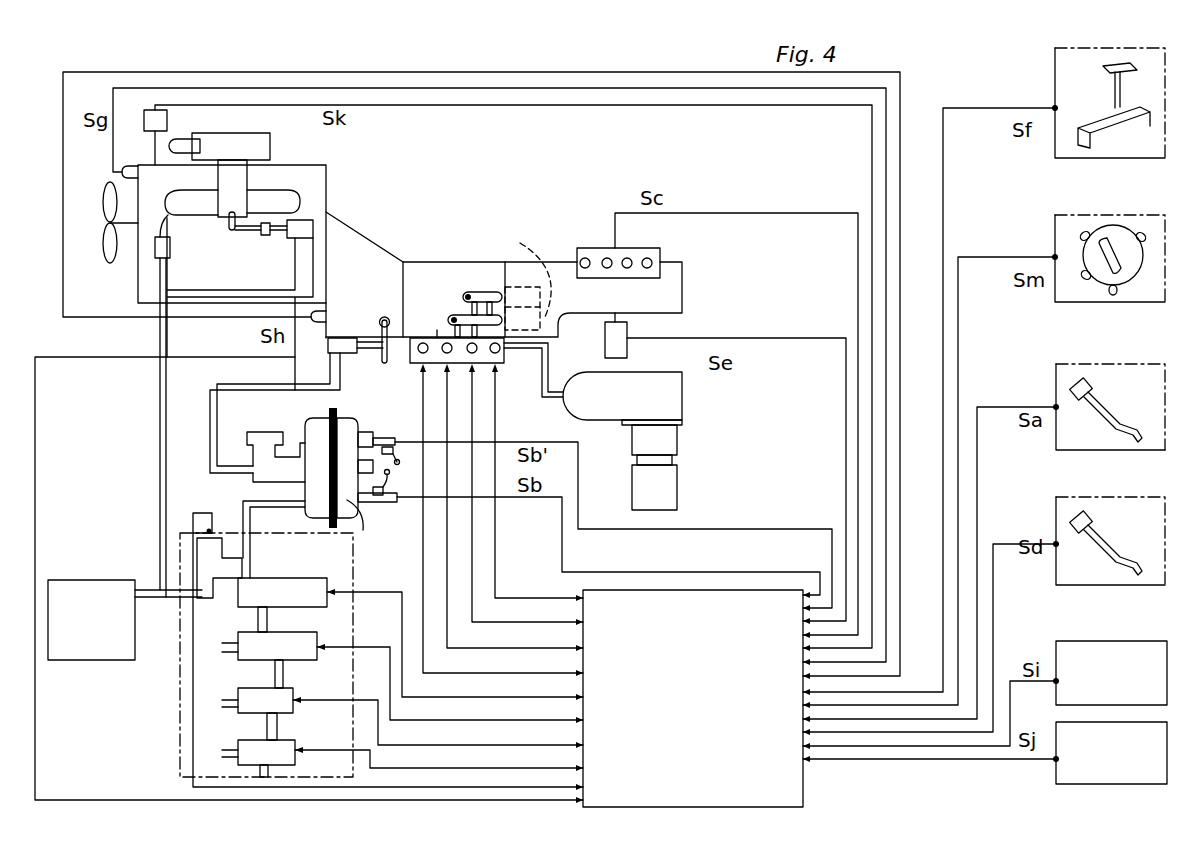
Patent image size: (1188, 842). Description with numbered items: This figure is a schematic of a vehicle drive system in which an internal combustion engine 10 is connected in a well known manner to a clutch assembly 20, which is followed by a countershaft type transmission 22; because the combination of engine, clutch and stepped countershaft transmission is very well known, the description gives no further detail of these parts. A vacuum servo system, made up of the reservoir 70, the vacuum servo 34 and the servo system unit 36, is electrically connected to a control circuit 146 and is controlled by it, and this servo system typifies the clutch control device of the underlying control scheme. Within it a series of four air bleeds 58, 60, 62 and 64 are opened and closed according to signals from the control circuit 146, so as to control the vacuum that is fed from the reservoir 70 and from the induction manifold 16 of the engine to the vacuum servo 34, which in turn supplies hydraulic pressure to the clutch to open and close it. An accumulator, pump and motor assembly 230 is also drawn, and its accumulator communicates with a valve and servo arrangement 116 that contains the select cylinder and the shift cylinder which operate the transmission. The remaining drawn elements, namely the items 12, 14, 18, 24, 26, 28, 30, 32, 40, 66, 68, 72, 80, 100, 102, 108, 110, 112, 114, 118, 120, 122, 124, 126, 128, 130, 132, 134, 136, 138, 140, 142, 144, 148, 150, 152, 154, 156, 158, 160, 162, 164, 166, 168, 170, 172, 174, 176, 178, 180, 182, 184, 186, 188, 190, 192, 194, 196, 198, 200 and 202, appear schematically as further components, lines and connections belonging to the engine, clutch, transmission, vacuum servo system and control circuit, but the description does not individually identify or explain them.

The internal combustion engine 10 is at (338, 170).
The air cleaner / carburetor 12 is at (250, 133).
The exhaust manifold 14 is at (253, 180).
The induction manifold 16 is at (180, 190).
The accelerator pedal 18 is at (1130, 414).
The clutch assembly 20 is at (366, 219).
The countershaft type transmission 22 is at (505, 262).
The clutch lever 24 is at (387, 360).
The link rod 26 is at (372, 350).
The clutch actuator 28 is at (328, 353).
The vacuum booster 30 is at (297, 530).
The vacuum conduit 32 is at (253, 482).
The vacuum servo 34 is at (305, 418).
The vacuum servo system 36 is at (180, 680).
The vacuum pipe 40 is at (210, 405).
The air bleed 58 is at (310, 607).
The air bleed 60 is at (305, 660).
The air bleed 62 is at (298, 713).
The air bleed 64 is at (240, 740).
The check valve 66 is at (219, 520).
The vacuum pipe 68 is at (158, 491).
The reservoir 70 is at (100, 662).
The vacuum take-off 72 is at (153, 250).
The valve block 80 is at (203, 600).
The clutch disc 100 is at (550, 267).
The clutch pressure plate 102 is at (525, 262).
The release bearing leg 108 is at (478, 301).
The release lever 110 is at (468, 292).
The release fork 112 is at (450, 317).
The release rod 114 is at (437, 332).
The valve and servo arrangement 116 is at (507, 365).
The shift lever 118 is at (1113, 72).
The EGR valve 120 is at (266, 236).
The vacuum valve 122 is at (229, 223).
The EGR control box 124 is at (290, 238).
The EGR pipe 126 is at (218, 290).
The control wire 128 is at (359, 588).
The control wire 130 is at (388, 647).
The control wire 132 is at (378, 700).
The control wire 134 is at (346, 750).
The control wire 136 is at (192, 787).
The sensor wire 138 is at (496, 510).
The sensor wire 140 is at (472, 533).
The sensor wire 142 is at (447, 562).
The sensor wire 144 is at (423, 588).
The control circuit 146 is at (803, 792).
The wire 148 is at (40, 740).
The brake pedal 150 is at (1128, 549).
The accelerator pedal switch 152 is at (1056, 390).
The wire 154 is at (977, 450).
The push rod 156 is at (374, 526).
The push rod 158 is at (366, 432).
The switch 160 is at (397, 458).
The wire 162 is at (612, 572).
The gear position switch 164 is at (660, 245).
The wire 166 is at (835, 214).
The brake pedal switch 168 is at (1056, 525).
The wire 170 is at (993, 607).
The speed sensor 172 is at (627, 355).
The wire 174 is at (828, 340).
The shift lever switch 176 is at (1054, 90).
The wire 178 is at (943, 168).
The fan speed sensor 180 is at (122, 172).
The wire 182 is at (633, 88).
The engine speed sensor 184 is at (325, 313).
The wire 186 is at (553, 72).
The inclinometer 188 is at (1100, 641).
The wire 190 is at (897, 746).
The air conditioner 192 is at (1056, 776).
The wire 194 is at (942, 759).
The temperature sensor 196 is at (167, 120).
The wire 198 is at (733, 105).
The ignition switch 200 is at (1055, 232).
The wire 202 is at (958, 310).
The accumulator, pump and motor 230 is at (684, 397).